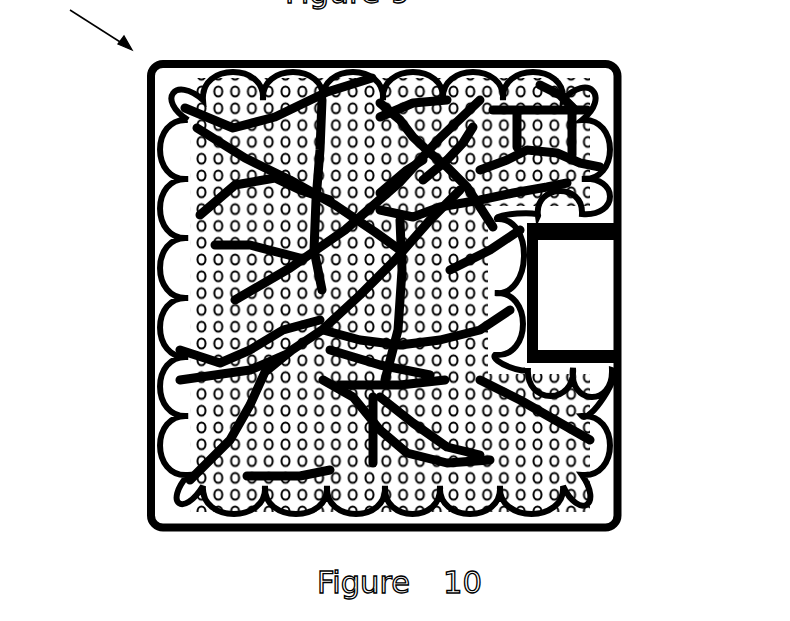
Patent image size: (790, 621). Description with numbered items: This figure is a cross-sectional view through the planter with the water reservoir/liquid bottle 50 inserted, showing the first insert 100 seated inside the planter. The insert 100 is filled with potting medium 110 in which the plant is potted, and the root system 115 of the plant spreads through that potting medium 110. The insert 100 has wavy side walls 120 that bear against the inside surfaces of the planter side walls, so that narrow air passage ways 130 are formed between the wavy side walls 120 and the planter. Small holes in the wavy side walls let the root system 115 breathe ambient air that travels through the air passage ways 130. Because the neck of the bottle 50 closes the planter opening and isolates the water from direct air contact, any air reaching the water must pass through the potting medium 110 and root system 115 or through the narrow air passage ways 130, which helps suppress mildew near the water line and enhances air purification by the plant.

The water reservoir/liquid bottle 50 is at (623, 307).
The first insert 100 is at (163, 305).
The potting medium 110 is at (152, 253).
The root system 115 is at (177, 127).
The wavy side walls 120 is at (553, 80).
The narrow air passage ways 130 is at (162, 357).